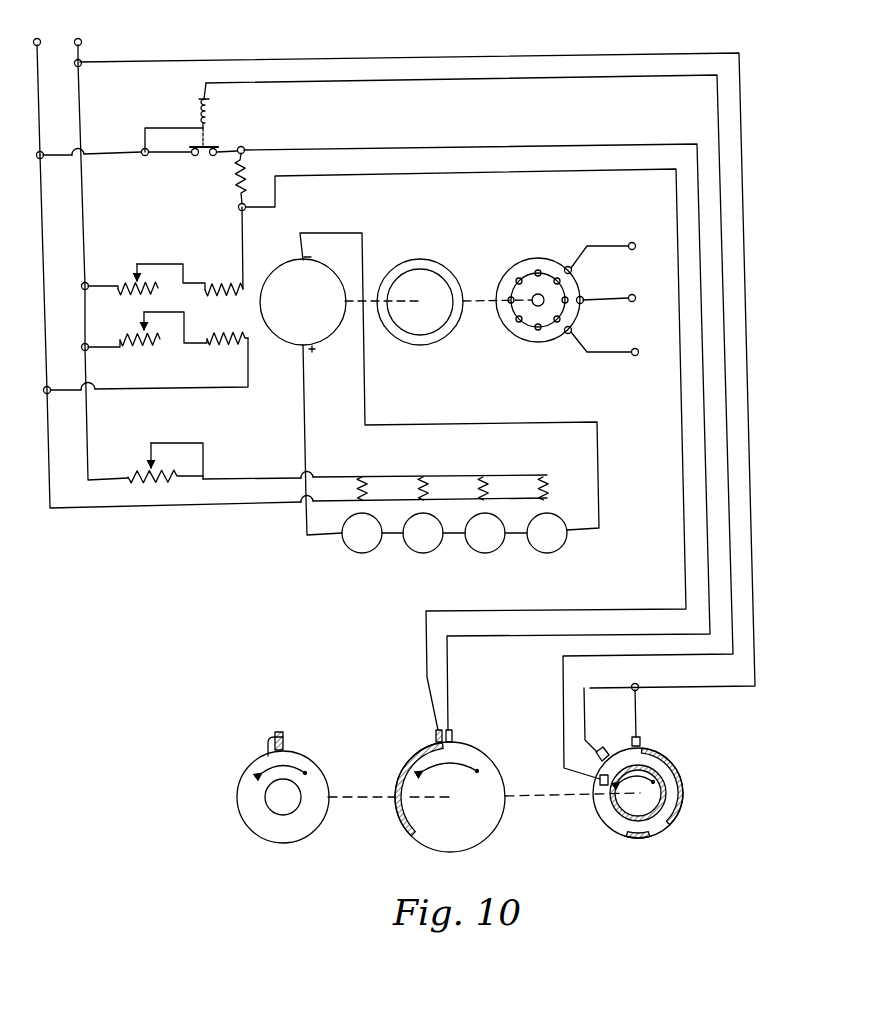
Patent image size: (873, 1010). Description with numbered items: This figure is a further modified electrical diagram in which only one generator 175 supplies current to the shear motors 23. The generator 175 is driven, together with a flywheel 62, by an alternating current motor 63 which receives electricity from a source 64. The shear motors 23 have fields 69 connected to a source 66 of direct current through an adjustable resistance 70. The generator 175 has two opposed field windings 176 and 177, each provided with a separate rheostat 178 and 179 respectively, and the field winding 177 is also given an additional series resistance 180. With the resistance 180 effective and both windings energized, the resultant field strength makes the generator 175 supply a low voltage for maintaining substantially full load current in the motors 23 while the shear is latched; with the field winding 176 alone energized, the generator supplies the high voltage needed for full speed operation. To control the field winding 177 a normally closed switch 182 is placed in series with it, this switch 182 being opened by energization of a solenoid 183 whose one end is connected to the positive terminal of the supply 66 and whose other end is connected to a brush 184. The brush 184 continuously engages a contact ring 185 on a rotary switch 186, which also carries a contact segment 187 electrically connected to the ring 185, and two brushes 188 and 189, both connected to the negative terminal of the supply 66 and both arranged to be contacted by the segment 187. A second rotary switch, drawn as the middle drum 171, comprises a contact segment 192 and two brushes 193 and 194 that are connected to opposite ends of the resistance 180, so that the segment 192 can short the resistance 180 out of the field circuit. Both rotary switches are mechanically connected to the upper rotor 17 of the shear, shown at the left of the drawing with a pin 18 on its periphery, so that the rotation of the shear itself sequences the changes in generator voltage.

The source of direct current 66 is at (55, 35).
The solenoid 183 is at (216, 103).
The normally closed switch 182 is at (204, 149).
The series resistance 180 is at (227, 179).
The rheostat 179 is at (138, 274).
The field winding 177 is at (224, 283).
The rheostat 178 is at (140, 336).
The field winding 176 is at (227, 346).
The generator 175 is at (287, 337).
The flywheel 62 is at (430, 256).
The alternating current motor 63 is at (551, 256).
The source 64 is at (634, 249).
The adjustable resistance 70 is at (165, 457).
The fields 69 is at (536, 494).
The shear motors 23 is at (537, 548).
The upper rotor 17 is at (277, 836).
The contact pin 18 is at (284, 738).
The drum 171 is at (450, 797).
The contact segment 192 is at (411, 761).
The brush 194 is at (436, 738).
The brush 193 is at (452, 735).
The contact segment 187 is at (683, 807).
The contact ring 185 is at (618, 816).
The rotary switch 186 is at (654, 840).
The brush 188 is at (641, 741).
The brush 189 is at (609, 745).
The brush 184 is at (600, 785).